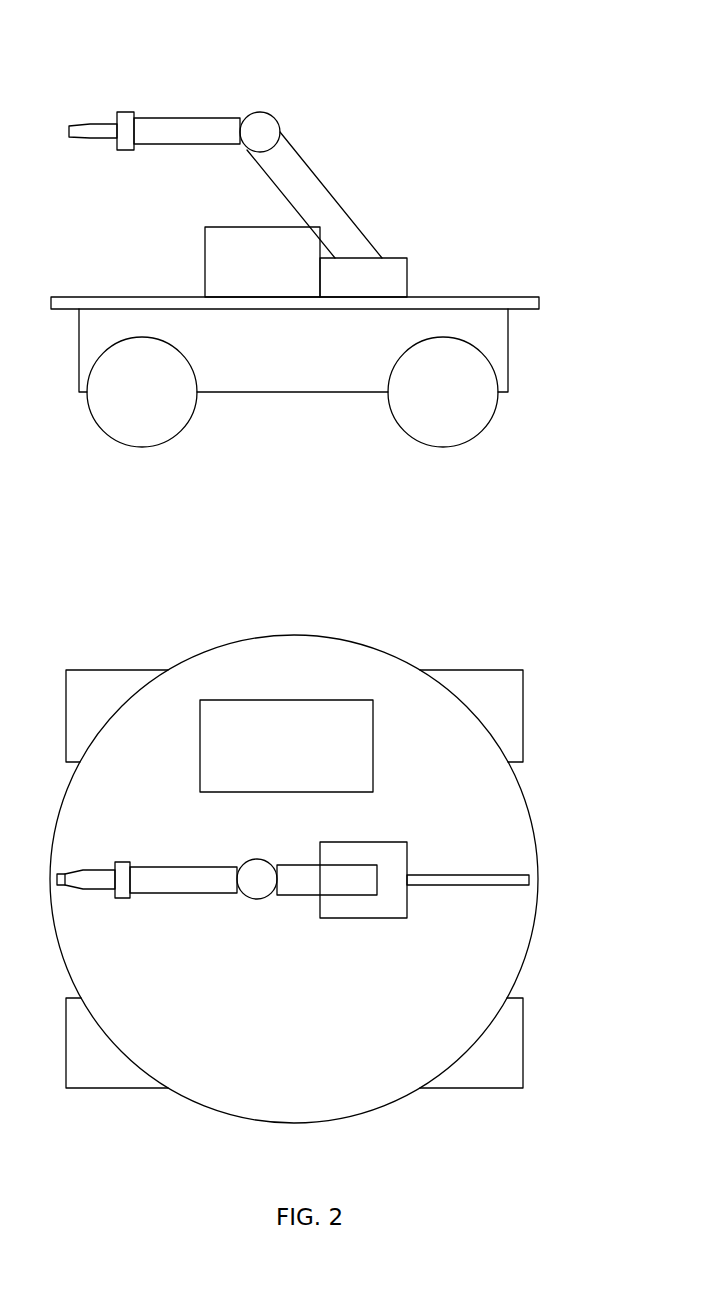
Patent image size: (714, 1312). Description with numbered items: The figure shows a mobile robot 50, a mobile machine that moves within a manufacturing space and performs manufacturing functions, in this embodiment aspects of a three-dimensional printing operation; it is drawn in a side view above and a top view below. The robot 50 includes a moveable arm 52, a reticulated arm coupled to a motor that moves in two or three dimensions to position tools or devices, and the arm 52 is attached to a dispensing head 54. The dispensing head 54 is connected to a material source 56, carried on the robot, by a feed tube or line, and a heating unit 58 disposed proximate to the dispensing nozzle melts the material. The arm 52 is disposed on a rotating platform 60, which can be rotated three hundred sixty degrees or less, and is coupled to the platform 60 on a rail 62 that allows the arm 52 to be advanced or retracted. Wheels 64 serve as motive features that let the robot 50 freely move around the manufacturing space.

The mobile robot 50 is at (519, 58).
The moveable arm 52 is at (313, 167).
The dispensing head 54 is at (93, 123).
The material source 56 is at (188, 230).
The heating unit 58 is at (128, 118).
The rotating platform 60 is at (443, 300).
The rail 62 is at (492, 882).
The wheels 64 is at (480, 683).